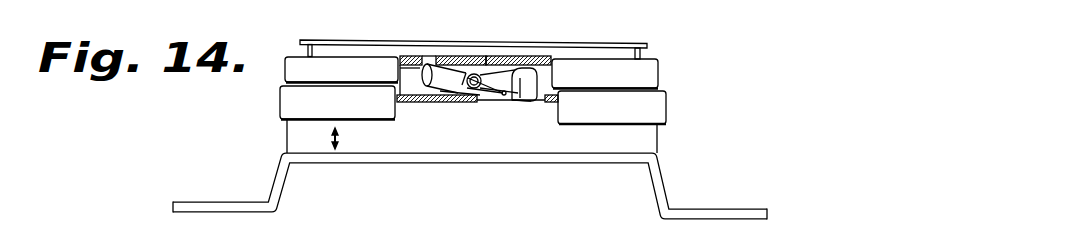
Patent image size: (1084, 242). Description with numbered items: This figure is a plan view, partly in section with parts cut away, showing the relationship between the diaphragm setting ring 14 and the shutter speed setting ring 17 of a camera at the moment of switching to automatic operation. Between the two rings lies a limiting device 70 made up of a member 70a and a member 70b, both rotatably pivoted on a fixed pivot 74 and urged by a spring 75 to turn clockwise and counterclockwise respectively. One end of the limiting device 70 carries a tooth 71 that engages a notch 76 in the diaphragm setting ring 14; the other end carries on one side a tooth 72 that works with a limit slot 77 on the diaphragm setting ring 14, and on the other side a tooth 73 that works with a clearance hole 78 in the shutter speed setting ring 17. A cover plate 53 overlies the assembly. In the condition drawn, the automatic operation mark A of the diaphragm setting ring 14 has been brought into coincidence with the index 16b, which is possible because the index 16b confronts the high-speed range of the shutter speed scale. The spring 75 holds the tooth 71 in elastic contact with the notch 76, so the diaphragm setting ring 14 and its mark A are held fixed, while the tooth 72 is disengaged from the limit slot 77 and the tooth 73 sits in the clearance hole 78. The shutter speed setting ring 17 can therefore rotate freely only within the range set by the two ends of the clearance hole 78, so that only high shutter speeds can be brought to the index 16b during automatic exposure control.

The diaphragm setting ring 14 is at (294, 63).
The automatic operation mark A is at (325, 68).
The shutter speed setting ring 17 is at (281, 103).
The cover plate 53 is at (603, 44).
The index 16b is at (338, 138).
The notch 76 is at (436, 57).
The limit slot 77 is at (540, 62).
The tooth 71 is at (424, 88).
The member 70a is at (444, 78).
The fixed pivot 74 is at (469, 73).
The spring 75 is at (468, 90).
The limiting device 70 is at (489, 78).
The clearance hole 78 is at (487, 98).
The tooth 72 is at (523, 67).
The tooth 73 is at (521, 100).
The member 70b is at (515, 101).